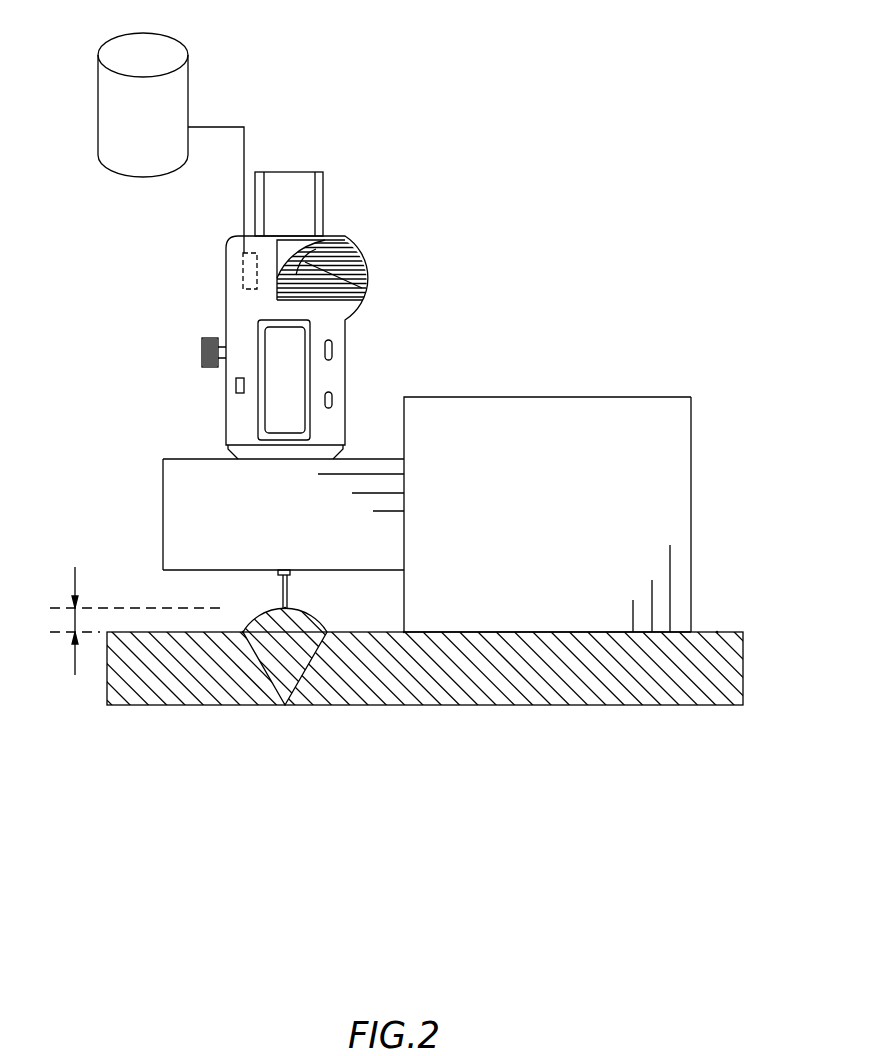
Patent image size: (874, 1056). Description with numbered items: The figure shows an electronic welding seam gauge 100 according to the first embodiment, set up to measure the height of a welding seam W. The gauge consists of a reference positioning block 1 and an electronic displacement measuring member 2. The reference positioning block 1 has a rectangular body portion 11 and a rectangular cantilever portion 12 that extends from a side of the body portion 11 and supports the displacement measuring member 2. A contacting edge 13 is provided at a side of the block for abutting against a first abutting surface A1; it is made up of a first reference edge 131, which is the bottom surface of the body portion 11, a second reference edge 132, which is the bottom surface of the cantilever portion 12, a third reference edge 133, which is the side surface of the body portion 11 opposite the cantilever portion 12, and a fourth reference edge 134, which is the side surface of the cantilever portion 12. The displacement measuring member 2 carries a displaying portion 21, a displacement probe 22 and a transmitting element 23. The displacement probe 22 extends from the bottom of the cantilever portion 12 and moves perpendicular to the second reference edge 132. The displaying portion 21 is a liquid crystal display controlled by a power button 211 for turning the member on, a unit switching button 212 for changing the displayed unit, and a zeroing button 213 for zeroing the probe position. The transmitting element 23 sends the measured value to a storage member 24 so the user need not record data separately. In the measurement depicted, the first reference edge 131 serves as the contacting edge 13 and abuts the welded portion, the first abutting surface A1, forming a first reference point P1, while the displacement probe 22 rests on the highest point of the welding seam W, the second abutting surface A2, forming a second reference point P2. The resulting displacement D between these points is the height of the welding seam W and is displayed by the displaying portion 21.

The electronic welding seam gauge 100 is at (680, 108).
The reference positioning block 1 is at (660, 362).
The electronic displacement measuring member 2 is at (357, 187).
The body portion 11 is at (545, 412).
The cantilever portion 12 is at (193, 478).
The contacting edge 13 is at (702, 443).
The first reference edge 131 is at (567, 634).
The second reference edge 132 is at (363, 572).
The third reference edge 133 is at (691, 515).
The fourth reference edge 134 is at (160, 535).
The displaying portion 21 is at (275, 415).
The power button 211 is at (333, 404).
The unit switching button 212 is at (236, 387).
The zeroing button 213 is at (333, 349).
The displacement probe 22 is at (287, 588).
The transmitting element 23 is at (242, 275).
The storage member 24 is at (173, 88).
The first abutting surface A1 is at (717, 630).
The second abutting surface A2 is at (282, 605).
The displacement D is at (73, 620).
The first reference point P1 is at (405, 634).
The second reference point P2 is at (250, 636).
The welding seam W is at (285, 645).